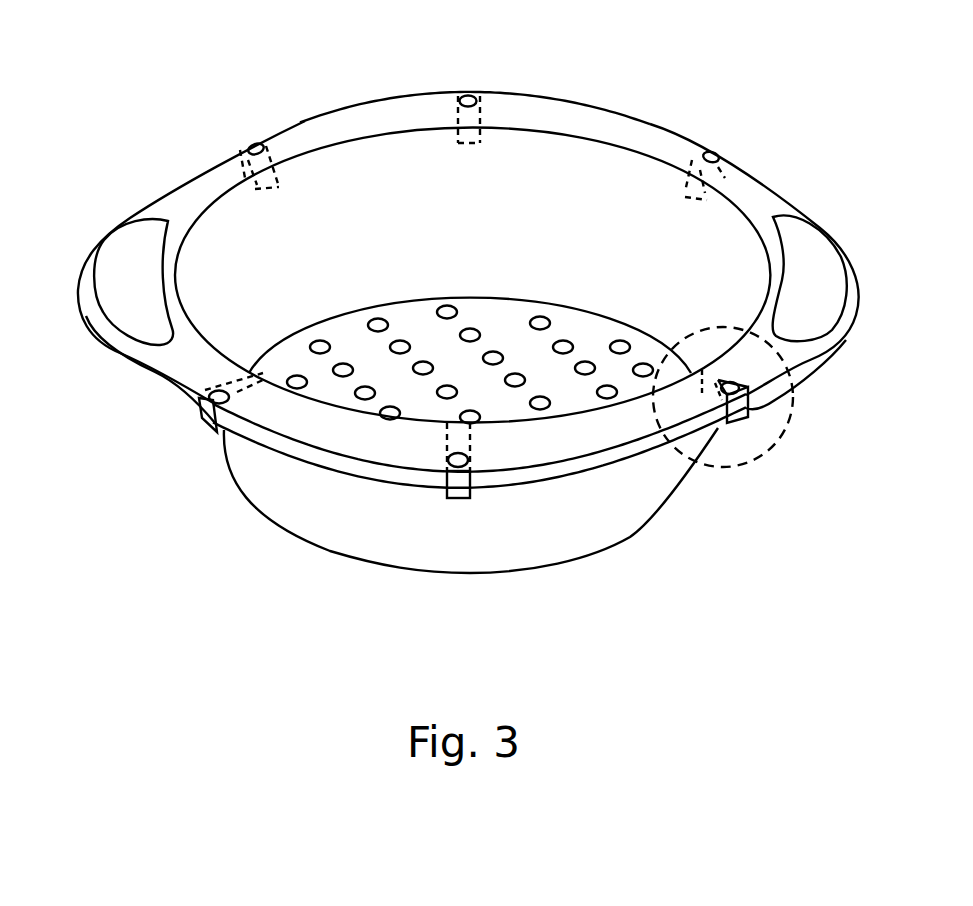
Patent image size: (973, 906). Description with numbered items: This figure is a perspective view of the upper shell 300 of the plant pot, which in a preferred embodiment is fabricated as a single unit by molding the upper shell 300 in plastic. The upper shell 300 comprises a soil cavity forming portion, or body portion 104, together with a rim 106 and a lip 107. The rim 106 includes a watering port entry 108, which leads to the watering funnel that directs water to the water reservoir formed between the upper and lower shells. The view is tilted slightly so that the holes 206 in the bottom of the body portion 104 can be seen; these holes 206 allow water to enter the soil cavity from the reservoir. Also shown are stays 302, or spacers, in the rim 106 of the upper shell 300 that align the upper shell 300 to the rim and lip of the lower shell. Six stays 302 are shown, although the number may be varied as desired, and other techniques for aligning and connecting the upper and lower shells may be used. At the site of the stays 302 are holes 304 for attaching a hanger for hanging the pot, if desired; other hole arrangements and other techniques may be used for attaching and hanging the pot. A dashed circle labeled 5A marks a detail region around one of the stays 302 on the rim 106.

The upper shell 300 is at (502, 377).
The rim 106 is at (587, 118).
The lip 107 is at (828, 352).
The watering port entry 108 is at (813, 285).
The holes 304 is at (717, 153).
The stays 302 is at (749, 411).
The detail region of Fig. 5A is at (795, 397).
The soil cavity forming portion 104 is at (657, 510).
The holes 206 is at (291, 384).